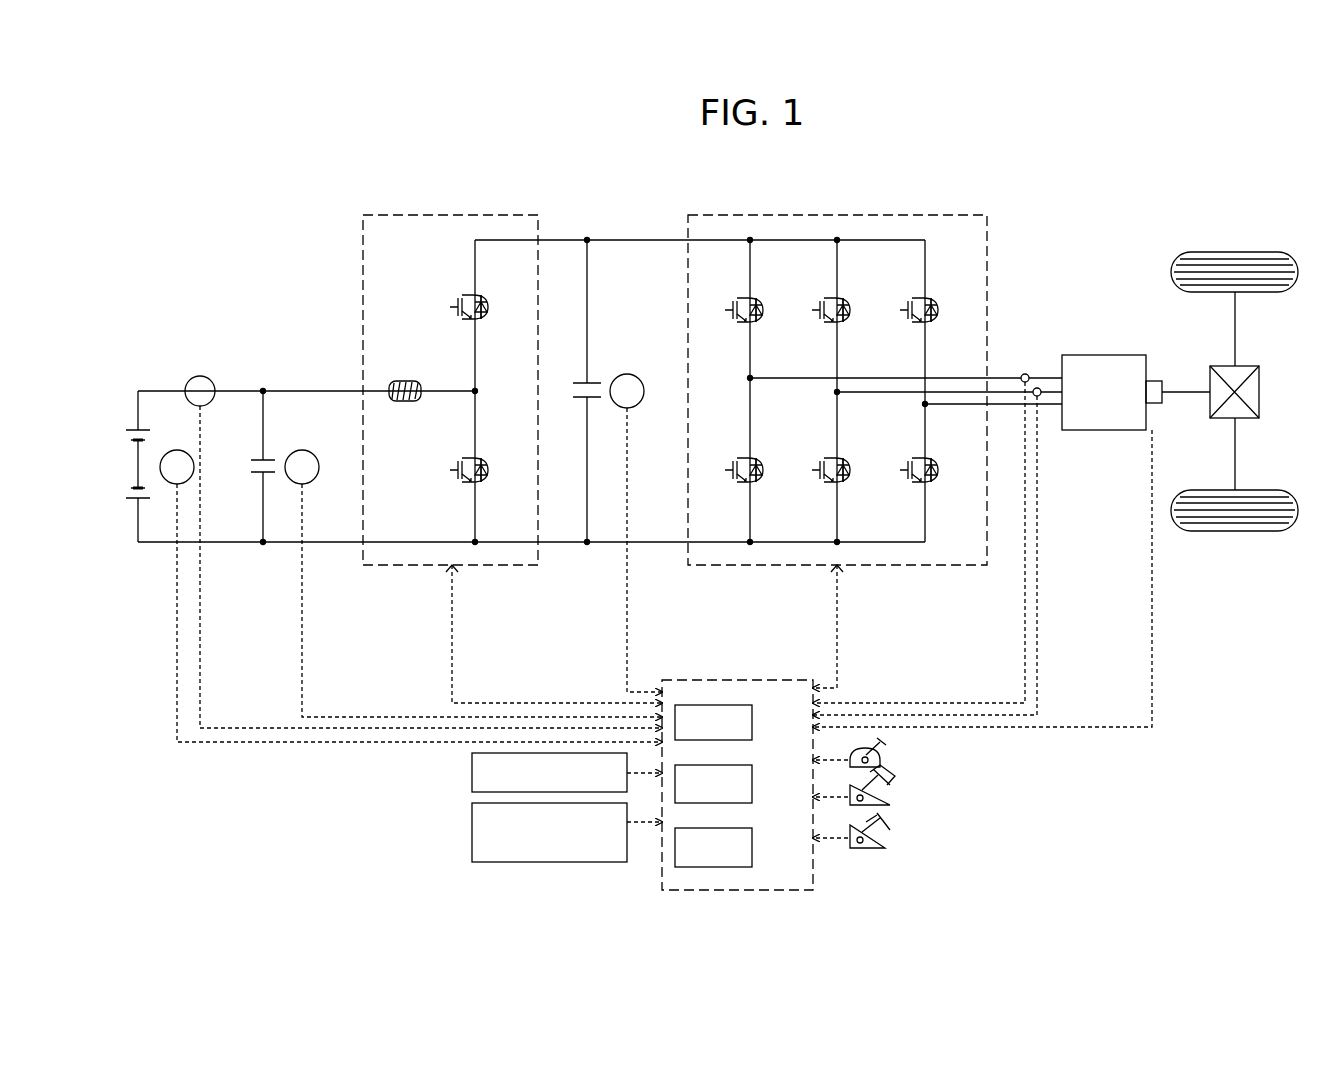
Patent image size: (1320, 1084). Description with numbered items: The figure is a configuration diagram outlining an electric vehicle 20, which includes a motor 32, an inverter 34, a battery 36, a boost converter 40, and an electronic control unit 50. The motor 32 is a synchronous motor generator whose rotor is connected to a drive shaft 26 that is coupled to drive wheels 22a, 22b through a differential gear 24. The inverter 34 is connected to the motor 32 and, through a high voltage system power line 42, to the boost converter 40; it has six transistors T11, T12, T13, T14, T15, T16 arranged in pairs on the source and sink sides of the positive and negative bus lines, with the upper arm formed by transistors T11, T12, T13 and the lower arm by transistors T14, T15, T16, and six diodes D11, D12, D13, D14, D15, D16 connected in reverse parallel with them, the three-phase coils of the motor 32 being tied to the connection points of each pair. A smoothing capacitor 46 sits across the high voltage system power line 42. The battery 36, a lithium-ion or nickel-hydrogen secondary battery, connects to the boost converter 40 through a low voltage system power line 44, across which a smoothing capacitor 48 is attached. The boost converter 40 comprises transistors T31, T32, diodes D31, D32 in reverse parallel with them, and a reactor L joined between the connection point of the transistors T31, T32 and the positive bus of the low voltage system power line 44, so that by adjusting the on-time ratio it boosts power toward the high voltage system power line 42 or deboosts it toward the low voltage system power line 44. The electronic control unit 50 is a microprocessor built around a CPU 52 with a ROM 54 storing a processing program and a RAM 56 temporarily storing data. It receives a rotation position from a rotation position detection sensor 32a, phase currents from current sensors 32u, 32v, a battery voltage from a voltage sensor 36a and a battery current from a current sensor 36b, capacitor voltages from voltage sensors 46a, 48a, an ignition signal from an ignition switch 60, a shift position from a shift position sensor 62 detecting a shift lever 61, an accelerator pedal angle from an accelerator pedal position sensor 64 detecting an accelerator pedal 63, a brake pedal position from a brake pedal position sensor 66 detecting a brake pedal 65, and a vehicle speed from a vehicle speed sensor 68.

The electric vehicle 20 is at (1134, 190).
The drive wheel 22a is at (1232, 252).
The drive wheel 22b is at (1232, 531).
The differential gear 24 is at (1240, 366).
The drive shaft 26 is at (1183, 388).
The motor 32 is at (1100, 355).
The rotation position detection sensor 32a is at (1152, 380).
The current sensor 32u is at (1024, 374).
The current sensor 32v is at (1038, 387).
The inverter 34 is at (837, 424).
The battery 36 is at (133, 427).
The voltage sensor 36a is at (176, 450).
The current sensor 36b is at (201, 376).
The boost converter 40 is at (512, 431).
The high voltage system power line 42 is at (677, 243).
The low voltage system power line 44 is at (347, 393).
The smoothing capacitor 46 is at (580, 381).
The voltage sensor 46a is at (627, 374).
The smoothing capacitor 48 is at (257, 458).
The voltage sensor 48a is at (302, 449).
The electronic control unit 50 is at (737, 759).
The CPU 52 is at (752, 724).
The ROM 54 is at (752, 786).
The RAM 56 is at (752, 849).
The ignition switch 60 is at (472, 773).
The shift lever 61 is at (886, 745).
The shift position sensor 62 is at (881, 763).
The accelerator pedal 63 is at (893, 790).
The accelerator pedal position sensor 64 is at (882, 805).
The brake pedal 65 is at (887, 833).
The brake pedal position sensor 66 is at (882, 848).
The vehicle speed sensor 68 is at (472, 825).
The reactor L is at (408, 380).
The transistor T11 is at (735, 298).
The transistor T12 is at (822, 298).
The transistor T13 is at (910, 298).
The transistor T14 is at (735, 458).
The transistor T15 is at (822, 458).
The transistor T16 is at (910, 458).
The transistor T31 is at (458, 298).
The transistor T32 is at (458, 462).
The diode D11 is at (765, 325).
The diode D12 is at (852, 325).
The diode D13 is at (940, 325).
The diode D14 is at (765, 488).
The diode D15 is at (852, 488).
The diode D16 is at (940, 488).
The diode D31 is at (490, 322).
The diode D32 is at (490, 485).